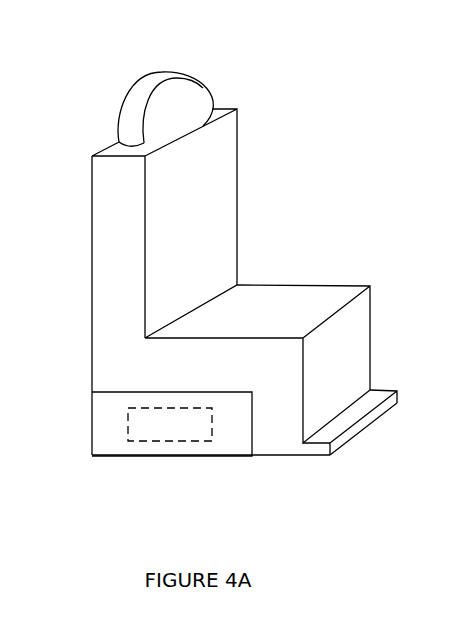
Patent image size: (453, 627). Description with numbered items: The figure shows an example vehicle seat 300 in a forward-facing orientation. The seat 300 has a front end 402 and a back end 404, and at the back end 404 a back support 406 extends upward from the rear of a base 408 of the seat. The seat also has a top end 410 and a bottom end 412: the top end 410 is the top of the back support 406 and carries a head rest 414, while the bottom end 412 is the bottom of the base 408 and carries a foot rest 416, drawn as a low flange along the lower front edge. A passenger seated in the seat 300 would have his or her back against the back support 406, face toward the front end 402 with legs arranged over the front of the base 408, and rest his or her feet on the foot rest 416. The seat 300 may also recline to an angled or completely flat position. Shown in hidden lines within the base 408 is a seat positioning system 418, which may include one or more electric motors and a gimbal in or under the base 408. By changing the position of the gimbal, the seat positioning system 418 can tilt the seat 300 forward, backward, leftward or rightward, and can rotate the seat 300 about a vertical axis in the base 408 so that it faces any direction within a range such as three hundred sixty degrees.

The seat 300 is at (228, 297).
The front end 402 is at (396, 361).
The back end 404 is at (130, 282).
The back support 406 is at (92, 263).
The base 408 is at (130, 455).
The top end 410 is at (202, 89).
The bottom end 412 is at (212, 491).
The head rest 414 is at (210, 94).
The foot rest 416 is at (325, 452).
The seat positioning system 418 is at (170, 424).